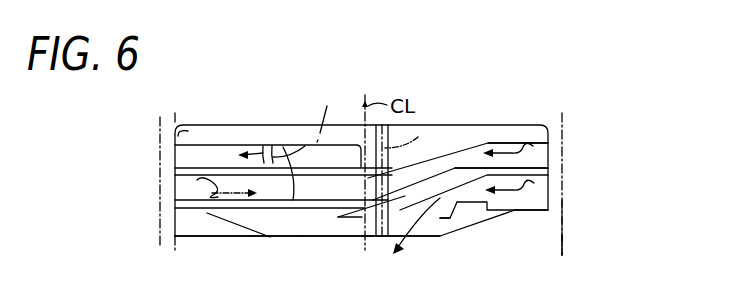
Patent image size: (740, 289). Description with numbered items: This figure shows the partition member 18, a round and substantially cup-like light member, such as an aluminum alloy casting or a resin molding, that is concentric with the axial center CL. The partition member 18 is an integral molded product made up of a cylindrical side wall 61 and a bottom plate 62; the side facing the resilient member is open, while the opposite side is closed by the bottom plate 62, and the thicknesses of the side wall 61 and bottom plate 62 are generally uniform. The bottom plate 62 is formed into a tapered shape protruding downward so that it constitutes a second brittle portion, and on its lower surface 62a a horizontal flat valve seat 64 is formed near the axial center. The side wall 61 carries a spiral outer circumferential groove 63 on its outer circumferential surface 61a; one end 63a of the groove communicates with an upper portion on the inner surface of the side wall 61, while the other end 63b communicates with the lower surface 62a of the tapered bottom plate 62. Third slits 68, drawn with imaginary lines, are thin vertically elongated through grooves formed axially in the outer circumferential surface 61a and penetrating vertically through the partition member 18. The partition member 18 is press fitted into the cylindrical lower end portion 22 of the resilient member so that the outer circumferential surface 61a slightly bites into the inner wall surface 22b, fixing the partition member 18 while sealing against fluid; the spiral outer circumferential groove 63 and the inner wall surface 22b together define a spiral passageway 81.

The partition member 18 is at (582, 134).
The lower end portion 22 is at (570, 227).
The inner wall surface 22b is at (551, 240).
The side wall 61 is at (176, 133).
The outer circumferential surface 61a is at (547, 172).
The bottom plate 62 is at (177, 237).
The lower surface 62a is at (235, 217).
The outer circumferential groove 63 is at (523, 212).
The end of the outer circumferential groove 63a is at (293, 200).
The other end of the outer circumferential groove 63b is at (447, 218).
The valve seat 64 is at (325, 236).
The third slits 68 is at (418, 137).
The spiral passageway 81 is at (535, 193).